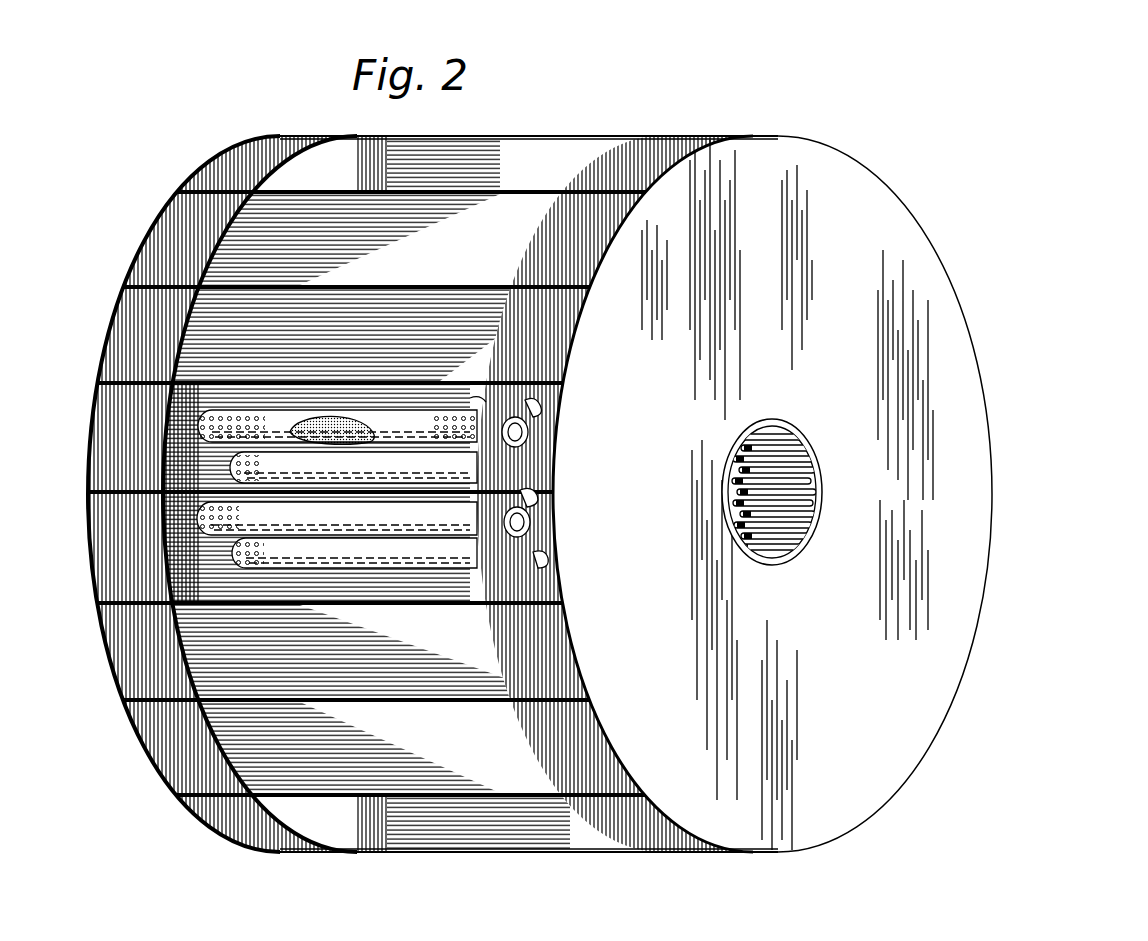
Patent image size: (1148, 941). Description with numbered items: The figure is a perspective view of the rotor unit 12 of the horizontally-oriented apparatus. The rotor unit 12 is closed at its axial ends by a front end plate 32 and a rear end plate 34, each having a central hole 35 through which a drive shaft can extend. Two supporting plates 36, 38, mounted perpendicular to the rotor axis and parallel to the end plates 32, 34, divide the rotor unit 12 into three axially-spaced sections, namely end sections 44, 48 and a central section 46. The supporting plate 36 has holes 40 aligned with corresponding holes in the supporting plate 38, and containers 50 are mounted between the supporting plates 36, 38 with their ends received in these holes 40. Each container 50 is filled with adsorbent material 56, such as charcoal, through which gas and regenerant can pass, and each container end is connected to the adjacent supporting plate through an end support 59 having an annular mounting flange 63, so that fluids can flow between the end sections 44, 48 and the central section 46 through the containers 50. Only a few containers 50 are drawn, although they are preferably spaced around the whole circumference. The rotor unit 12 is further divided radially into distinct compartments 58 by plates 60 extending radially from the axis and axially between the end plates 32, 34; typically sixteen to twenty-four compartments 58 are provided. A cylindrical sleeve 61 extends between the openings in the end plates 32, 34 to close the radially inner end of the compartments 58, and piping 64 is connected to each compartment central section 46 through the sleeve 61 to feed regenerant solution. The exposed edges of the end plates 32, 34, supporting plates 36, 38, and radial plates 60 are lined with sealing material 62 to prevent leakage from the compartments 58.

The rotor unit 12 is at (897, 165).
The front end plate 32 is at (895, 225).
The rear end plate 34 is at (150, 755).
The central holes 35 is at (822, 465).
The supporting plate 36 is at (602, 822).
The supporting plate 38 is at (317, 837).
The holes 40 is at (533, 433).
The end section 44 is at (663, 153).
The central section 46 is at (522, 147).
The end section 48 is at (178, 250).
The containers 50 is at (413, 422).
The adsorbent material 56 is at (330, 425).
The compartments 58 is at (268, 155).
The end support 59 is at (483, 400).
The plates 60 is at (590, 133).
The cylindrical sleeve 61 is at (808, 524).
The sealing material 62 is at (230, 212).
The annular mounting flange 63 is at (532, 413).
The piping 64 is at (757, 473).